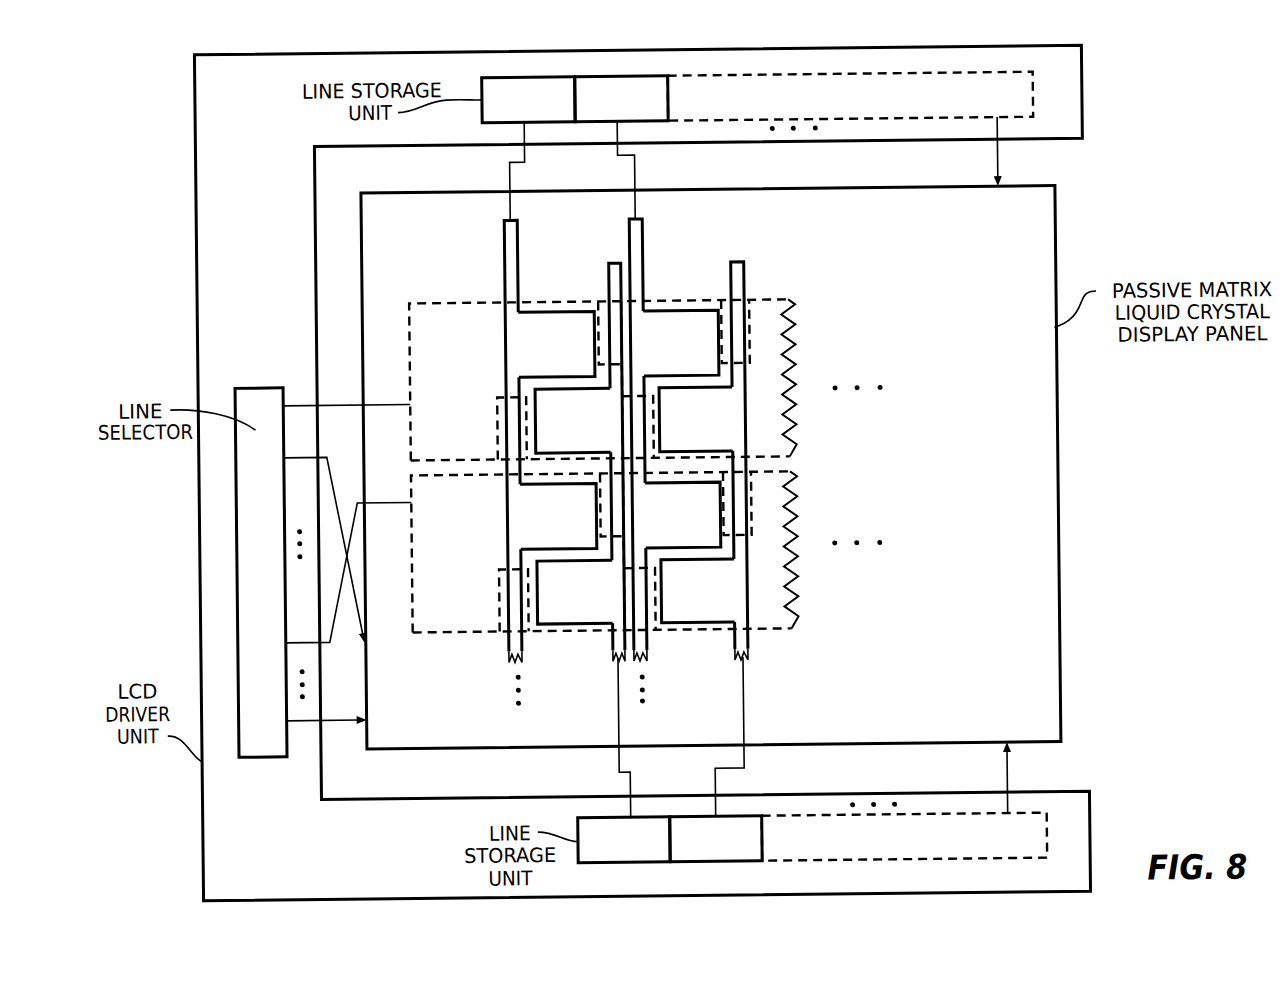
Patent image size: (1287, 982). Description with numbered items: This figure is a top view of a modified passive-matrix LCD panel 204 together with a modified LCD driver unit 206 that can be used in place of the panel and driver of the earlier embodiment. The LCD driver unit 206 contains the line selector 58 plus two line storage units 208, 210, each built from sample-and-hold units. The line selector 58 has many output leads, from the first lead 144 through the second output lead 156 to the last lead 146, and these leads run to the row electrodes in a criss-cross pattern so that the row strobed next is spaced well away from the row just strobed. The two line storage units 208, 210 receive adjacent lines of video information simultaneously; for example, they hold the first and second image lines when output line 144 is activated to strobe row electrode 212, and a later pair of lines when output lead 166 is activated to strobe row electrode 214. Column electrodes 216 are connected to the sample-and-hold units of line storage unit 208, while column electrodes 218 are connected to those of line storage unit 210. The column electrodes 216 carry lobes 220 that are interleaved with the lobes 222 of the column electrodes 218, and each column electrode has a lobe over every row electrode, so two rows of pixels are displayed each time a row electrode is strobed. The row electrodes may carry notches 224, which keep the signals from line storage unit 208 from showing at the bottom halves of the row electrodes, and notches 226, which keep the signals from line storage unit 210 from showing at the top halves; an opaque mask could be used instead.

The line selector 58 is at (260, 753).
The first output lead 144 is at (300, 402).
The last output lead 146 is at (338, 722).
The second output lead 156 is at (370, 648).
The output lead 166 is at (305, 637).
The passive-matrix LCD panel 204 is at (1058, 545).
The LCD driver unit 206 is at (203, 138).
The line storage unit 208 is at (871, 76).
The line storage unit 210 is at (690, 862).
The row electrode 212 is at (430, 301).
The row electrode 214 is at (786, 628).
The column electrodes 216 is at (520, 242).
The column electrodes 218 is at (611, 646).
The lobes 220 is at (542, 355).
The lobes 222 is at (555, 434).
The notches 224 is at (497, 430).
The notches 226 is at (600, 304).